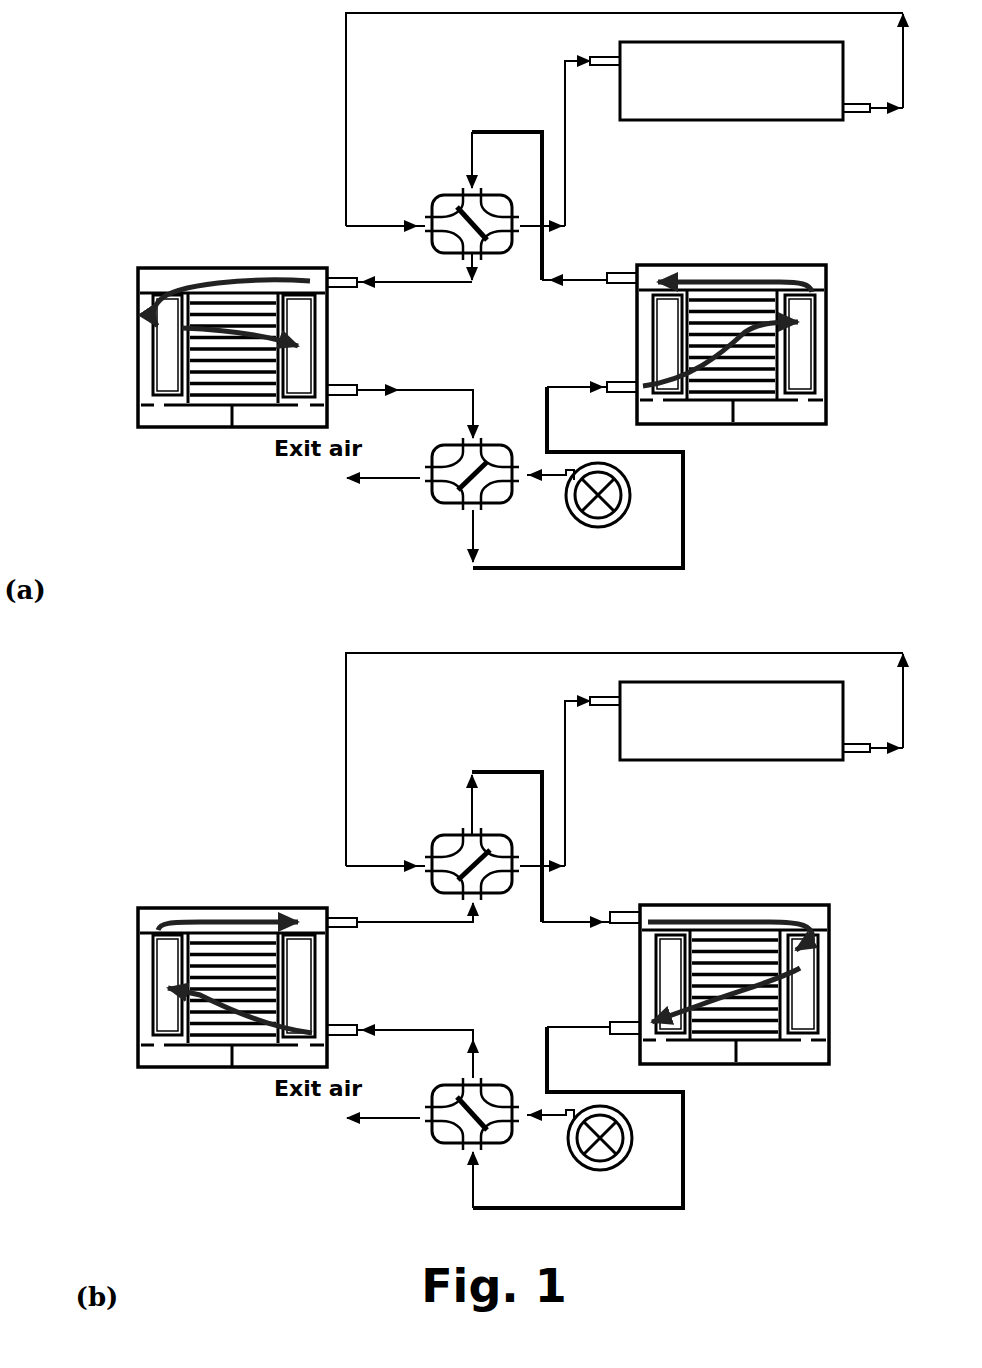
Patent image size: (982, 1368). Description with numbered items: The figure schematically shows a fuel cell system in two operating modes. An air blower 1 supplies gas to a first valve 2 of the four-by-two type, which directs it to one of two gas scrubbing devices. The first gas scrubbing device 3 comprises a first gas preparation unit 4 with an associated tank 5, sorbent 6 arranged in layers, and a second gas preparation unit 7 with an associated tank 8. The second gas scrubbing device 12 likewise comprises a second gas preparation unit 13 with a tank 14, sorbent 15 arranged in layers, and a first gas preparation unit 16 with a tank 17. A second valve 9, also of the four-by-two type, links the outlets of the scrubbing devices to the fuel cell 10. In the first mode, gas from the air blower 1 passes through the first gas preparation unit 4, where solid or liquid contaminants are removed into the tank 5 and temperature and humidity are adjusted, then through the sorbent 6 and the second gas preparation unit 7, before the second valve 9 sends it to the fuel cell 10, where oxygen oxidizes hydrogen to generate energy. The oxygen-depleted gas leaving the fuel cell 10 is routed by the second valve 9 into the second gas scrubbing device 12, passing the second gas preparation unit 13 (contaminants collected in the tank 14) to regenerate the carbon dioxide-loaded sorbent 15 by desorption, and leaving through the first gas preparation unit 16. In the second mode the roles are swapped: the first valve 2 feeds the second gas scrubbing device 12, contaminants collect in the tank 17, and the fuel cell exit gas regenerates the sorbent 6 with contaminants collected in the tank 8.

The air blower 1 is at (637, 502).
The first valve 2 is at (443, 500).
The first gas scrubbing device 3 is at (798, 278).
The first gas preparation unit 4 is at (665, 342).
The tank 5 is at (703, 407).
The sorbent 6 is at (827, 317).
The second gas preparation unit 7 is at (807, 348).
The tank 8 is at (760, 407).
The second valve 9 is at (452, 202).
The fuel cell 10 is at (813, 105).
The second gas scrubbing device 12 is at (257, 265).
The second gas preparation unit 13 is at (165, 355).
The tank 14 is at (195, 412).
The sorbent 15 is at (208, 362).
The first gas preparation unit 16 is at (307, 350).
The tank 17 is at (265, 412).